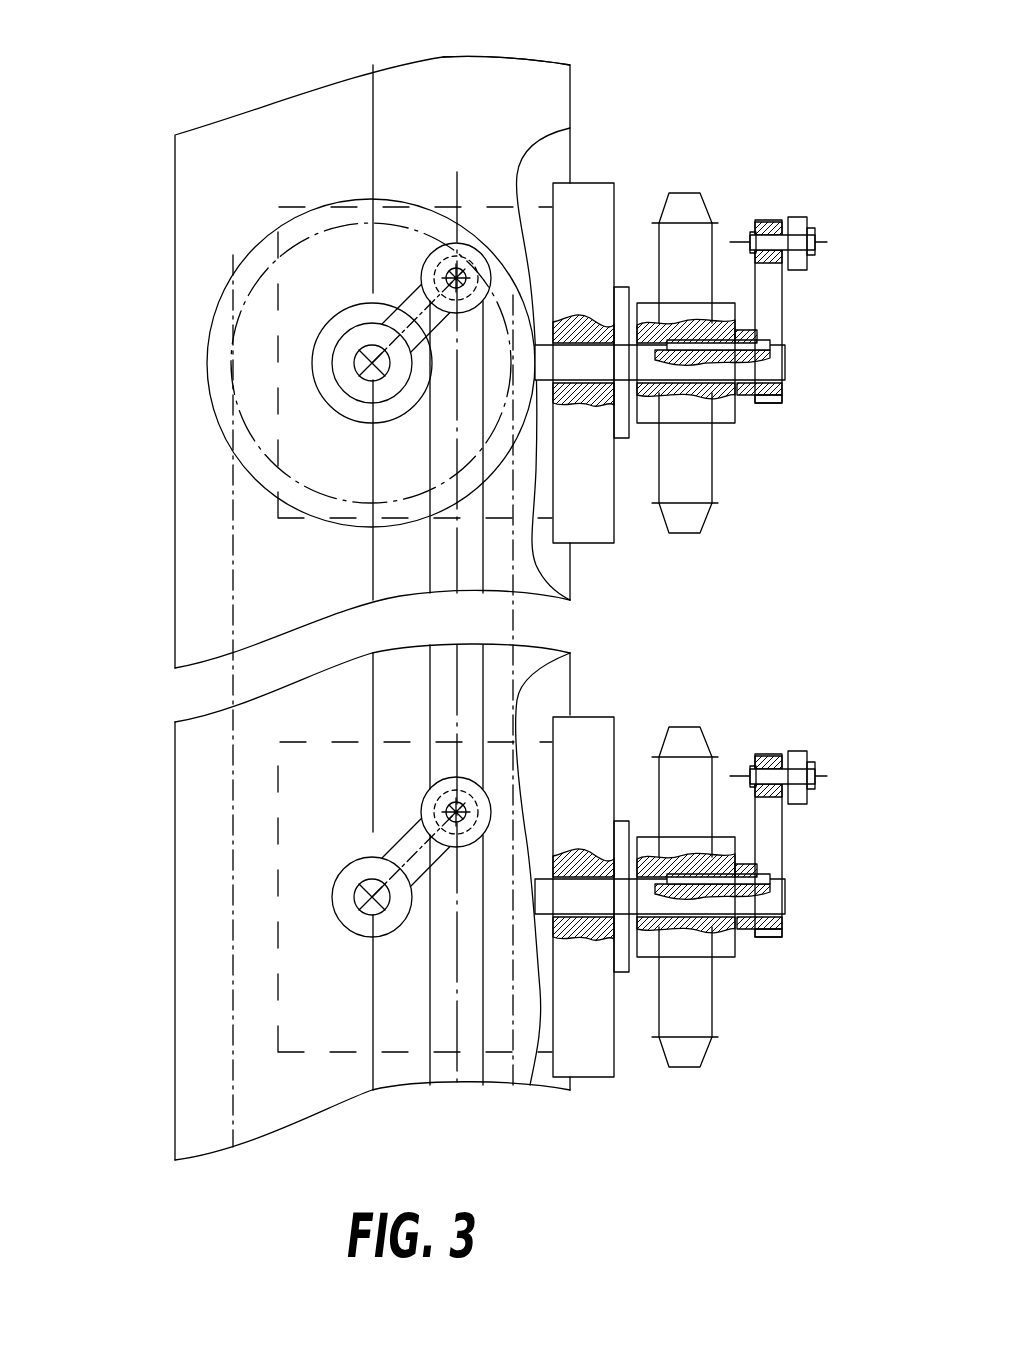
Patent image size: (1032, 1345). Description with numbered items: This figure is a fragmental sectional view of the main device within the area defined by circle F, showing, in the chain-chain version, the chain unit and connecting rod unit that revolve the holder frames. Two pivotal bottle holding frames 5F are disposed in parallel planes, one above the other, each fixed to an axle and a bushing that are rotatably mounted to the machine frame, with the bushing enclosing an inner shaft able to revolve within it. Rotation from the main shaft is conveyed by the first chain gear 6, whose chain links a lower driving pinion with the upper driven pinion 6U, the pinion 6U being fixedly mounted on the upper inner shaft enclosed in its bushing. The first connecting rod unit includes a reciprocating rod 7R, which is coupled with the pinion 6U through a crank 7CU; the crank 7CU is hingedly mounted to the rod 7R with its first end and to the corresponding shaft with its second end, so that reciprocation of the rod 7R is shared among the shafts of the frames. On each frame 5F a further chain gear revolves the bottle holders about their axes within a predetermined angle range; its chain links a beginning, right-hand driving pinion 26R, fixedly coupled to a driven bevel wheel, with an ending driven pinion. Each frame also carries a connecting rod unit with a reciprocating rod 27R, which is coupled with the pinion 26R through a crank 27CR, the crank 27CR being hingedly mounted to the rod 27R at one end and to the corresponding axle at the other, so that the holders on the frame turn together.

The first chain gear 6 is at (232, 593).
The circle F is at (506, 32).
The upper driven pinion 6U is at (257, 333).
The crank 7CU is at (431, 304).
The reciprocating rod 7R is at (470, 548).
The pivotal bottle holding frame 5F is at (587, 517).
The beginning driving pinion 26R is at (693, 452).
The crank 27CR is at (768, 298).
The reciprocating rod 27R is at (797, 217).